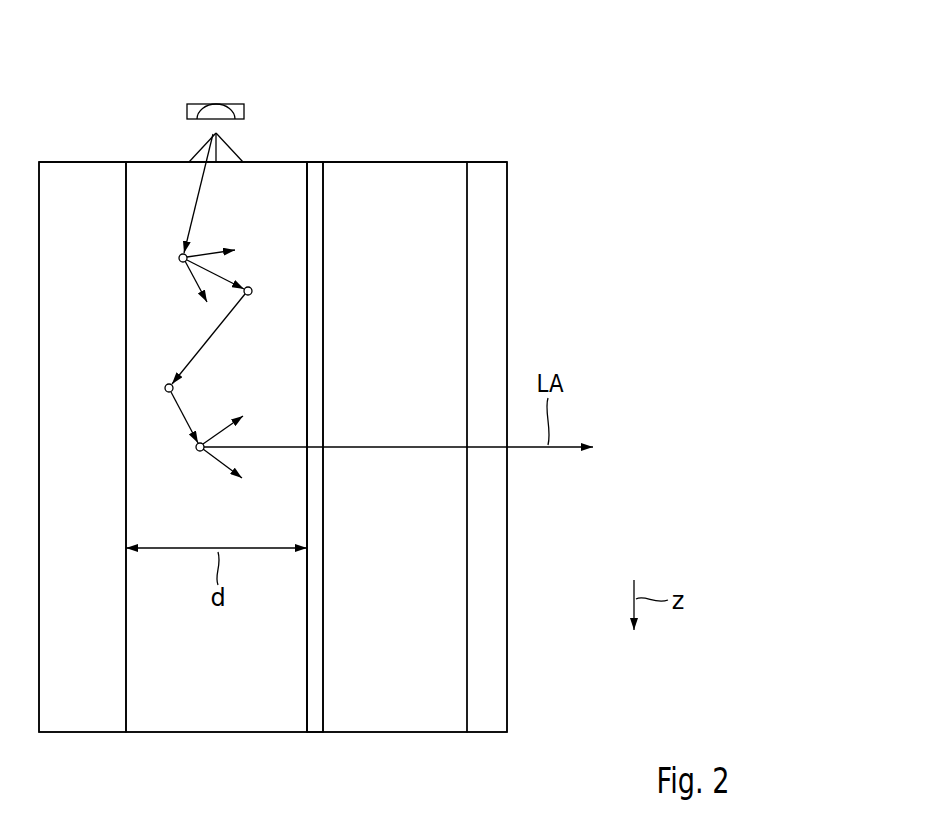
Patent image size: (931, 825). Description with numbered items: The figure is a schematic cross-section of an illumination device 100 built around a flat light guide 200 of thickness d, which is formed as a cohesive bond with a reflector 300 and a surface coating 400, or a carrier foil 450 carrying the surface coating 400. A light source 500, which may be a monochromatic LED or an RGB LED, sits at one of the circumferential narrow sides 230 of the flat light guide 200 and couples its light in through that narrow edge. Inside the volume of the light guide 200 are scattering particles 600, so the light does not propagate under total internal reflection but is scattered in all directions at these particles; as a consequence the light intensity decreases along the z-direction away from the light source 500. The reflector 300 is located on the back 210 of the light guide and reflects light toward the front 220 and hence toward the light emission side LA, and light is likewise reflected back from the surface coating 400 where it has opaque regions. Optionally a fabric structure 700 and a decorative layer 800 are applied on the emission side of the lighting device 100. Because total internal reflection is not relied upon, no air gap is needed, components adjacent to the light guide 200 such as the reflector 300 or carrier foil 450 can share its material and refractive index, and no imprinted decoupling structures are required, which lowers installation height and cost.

The illumination device 100 is at (592, 178).
The flat light guide 200 is at (231, 676).
The back 210 is at (125, 588).
The front 220 is at (308, 586).
The circumferential narrow side 230 is at (276, 160).
The reflector 300 is at (80, 717).
The surface coating 400 is at (315, 717).
The carrier foil 450 is at (315, 447).
The light source 500 is at (216, 103).
The scattering particles 600 is at (181, 262).
The fabric structure 700 is at (413, 717).
The decorative layer 800 is at (486, 717).